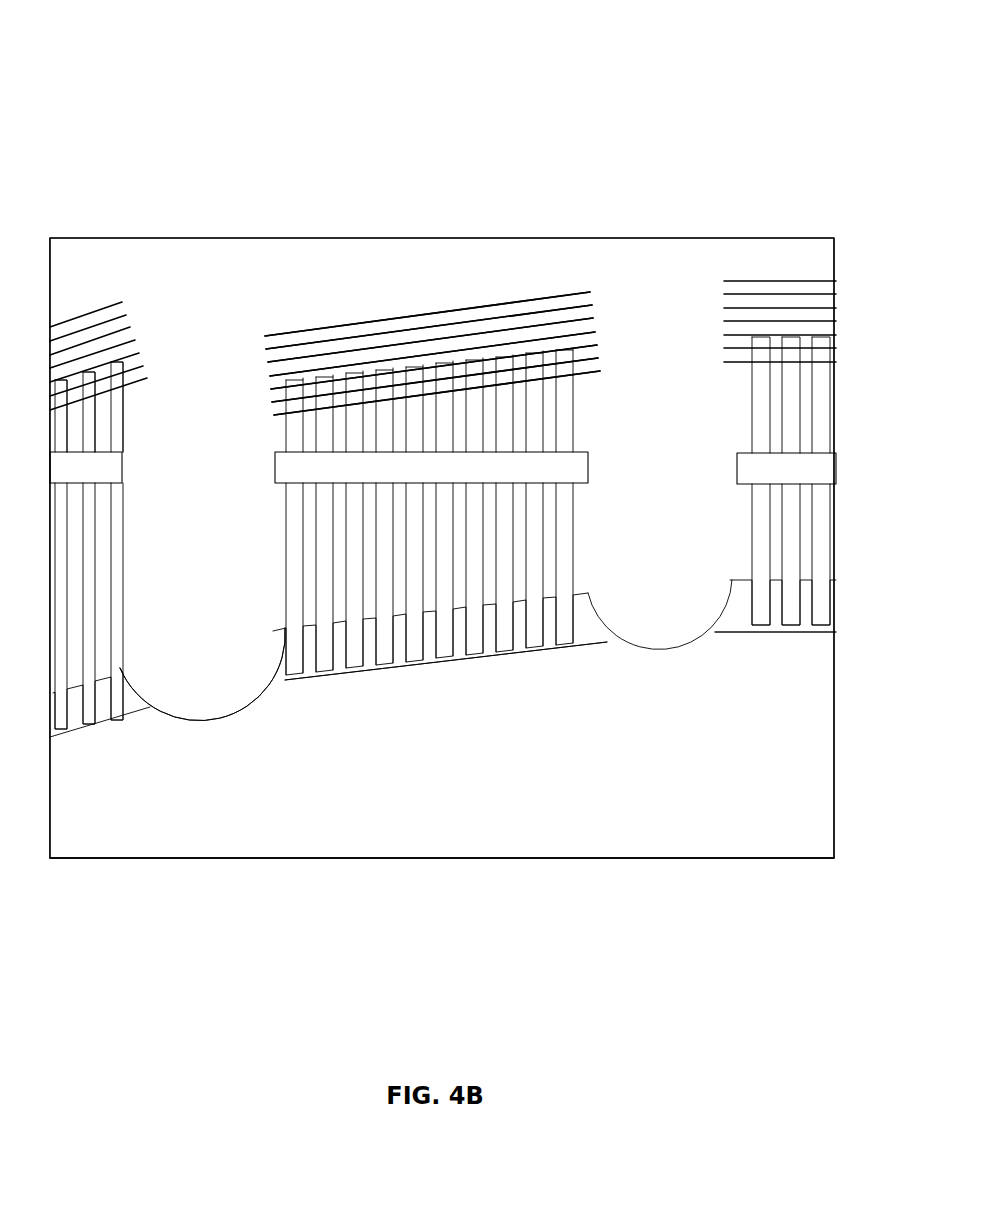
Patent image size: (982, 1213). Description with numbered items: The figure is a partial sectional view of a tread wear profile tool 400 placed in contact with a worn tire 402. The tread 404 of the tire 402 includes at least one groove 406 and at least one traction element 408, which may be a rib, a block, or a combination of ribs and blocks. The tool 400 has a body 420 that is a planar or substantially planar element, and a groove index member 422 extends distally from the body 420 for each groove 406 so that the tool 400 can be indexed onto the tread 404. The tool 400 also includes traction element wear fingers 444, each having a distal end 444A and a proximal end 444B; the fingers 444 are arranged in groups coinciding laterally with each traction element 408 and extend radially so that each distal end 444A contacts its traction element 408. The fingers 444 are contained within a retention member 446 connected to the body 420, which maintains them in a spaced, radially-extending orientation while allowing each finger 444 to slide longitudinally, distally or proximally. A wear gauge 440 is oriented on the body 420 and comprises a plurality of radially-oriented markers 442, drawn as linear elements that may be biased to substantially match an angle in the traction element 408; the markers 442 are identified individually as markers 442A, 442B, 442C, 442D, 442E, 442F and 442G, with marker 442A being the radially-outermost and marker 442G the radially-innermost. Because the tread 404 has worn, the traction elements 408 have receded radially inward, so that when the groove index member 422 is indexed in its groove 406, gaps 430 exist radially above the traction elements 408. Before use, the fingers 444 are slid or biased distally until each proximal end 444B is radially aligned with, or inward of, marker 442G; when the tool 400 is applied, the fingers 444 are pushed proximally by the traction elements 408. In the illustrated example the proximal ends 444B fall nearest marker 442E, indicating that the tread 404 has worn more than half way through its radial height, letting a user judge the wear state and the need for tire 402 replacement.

The tread wear profile tool 400 is at (129, 118).
The tire 402 is at (787, 830).
The tread 404 is at (647, 803).
The groove 406 is at (183, 723).
The traction element 408 is at (520, 653).
The body 420 is at (170, 292).
The groove index member 422 is at (692, 627).
The gap 430 is at (283, 690).
The wear gauge 440 is at (716, 249).
The marker 442 is at (714, 341).
The radially-outermost marker 442A is at (310, 330).
The marker 442B is at (345, 338).
The marker 442C is at (380, 347).
The marker 442D is at (425, 354).
The marker 442E is at (463, 362).
The marker 442F is at (518, 368).
The radially-innermost marker 442G is at (552, 376).
The traction element wear finger 444 is at (413, 645).
The distal end 444A is at (105, 720).
The proximal end 444B is at (103, 358).
The retention member 446 is at (580, 483).